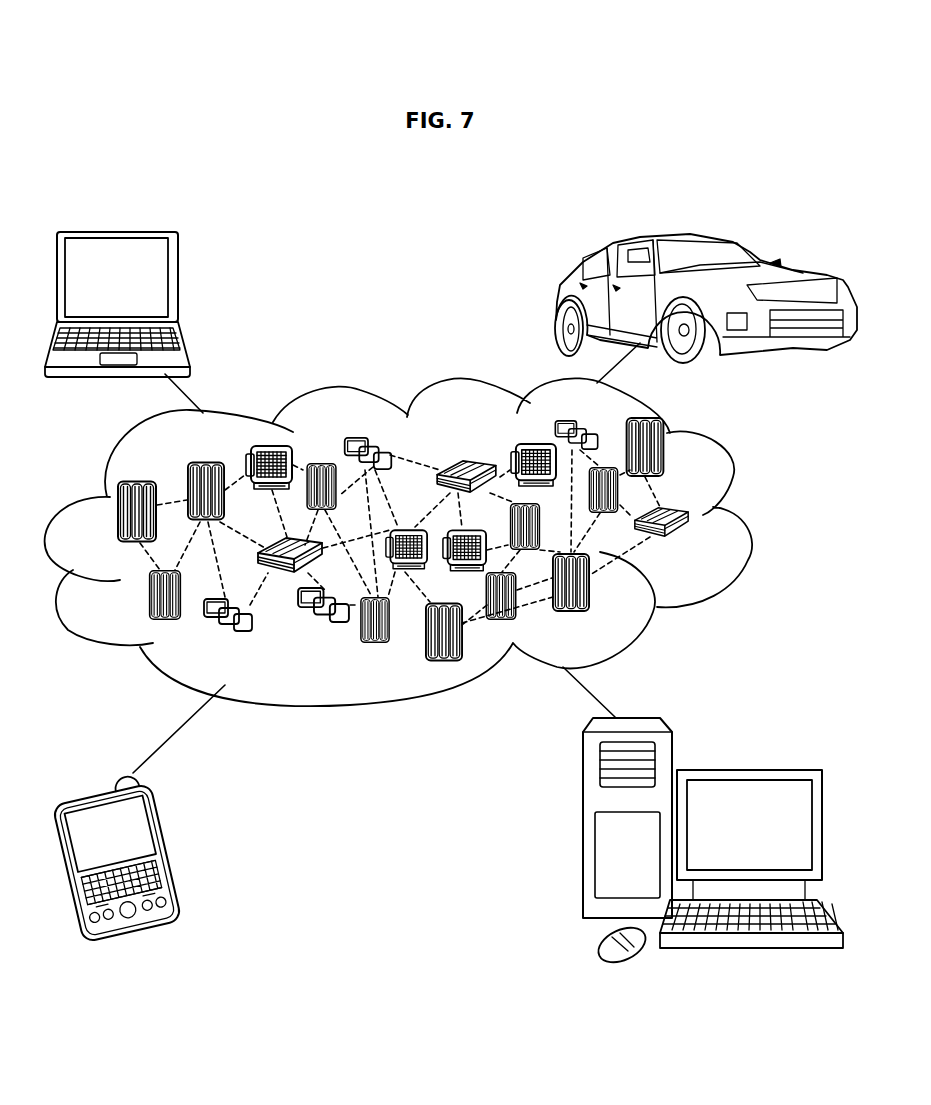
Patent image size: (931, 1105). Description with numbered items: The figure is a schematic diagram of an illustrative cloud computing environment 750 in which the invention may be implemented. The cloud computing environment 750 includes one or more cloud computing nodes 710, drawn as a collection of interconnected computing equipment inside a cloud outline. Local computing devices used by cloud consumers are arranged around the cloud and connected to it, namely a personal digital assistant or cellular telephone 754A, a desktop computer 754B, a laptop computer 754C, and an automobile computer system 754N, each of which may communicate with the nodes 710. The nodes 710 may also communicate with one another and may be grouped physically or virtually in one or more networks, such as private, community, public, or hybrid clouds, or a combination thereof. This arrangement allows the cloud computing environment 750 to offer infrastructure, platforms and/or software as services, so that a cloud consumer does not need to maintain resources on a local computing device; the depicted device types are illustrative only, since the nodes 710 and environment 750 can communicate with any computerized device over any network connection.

The cloud computing nodes 710 is at (698, 548).
The cloud computing environment 750 is at (745, 517).
The personal digital assistant (PDA) or cellular telephone 754A is at (170, 851).
The desktop computer 754B is at (748, 769).
The laptop computer 754C is at (178, 283).
The automobile computer system 754N is at (557, 301).